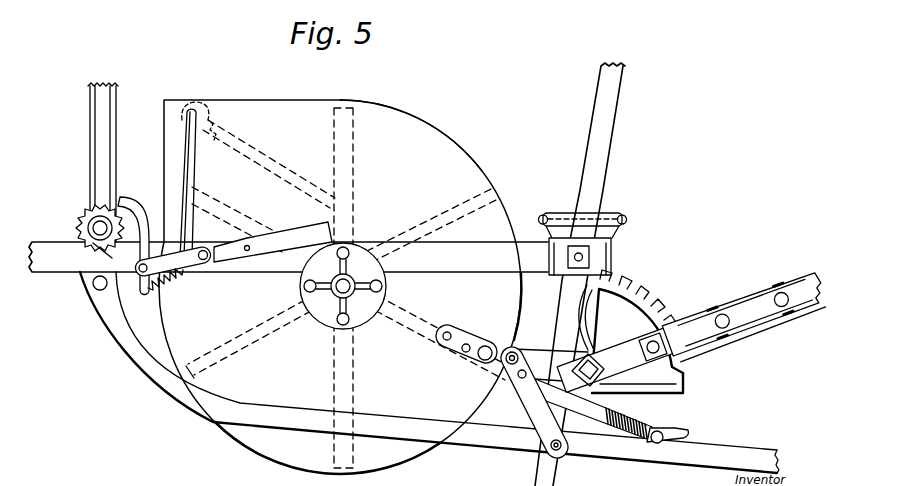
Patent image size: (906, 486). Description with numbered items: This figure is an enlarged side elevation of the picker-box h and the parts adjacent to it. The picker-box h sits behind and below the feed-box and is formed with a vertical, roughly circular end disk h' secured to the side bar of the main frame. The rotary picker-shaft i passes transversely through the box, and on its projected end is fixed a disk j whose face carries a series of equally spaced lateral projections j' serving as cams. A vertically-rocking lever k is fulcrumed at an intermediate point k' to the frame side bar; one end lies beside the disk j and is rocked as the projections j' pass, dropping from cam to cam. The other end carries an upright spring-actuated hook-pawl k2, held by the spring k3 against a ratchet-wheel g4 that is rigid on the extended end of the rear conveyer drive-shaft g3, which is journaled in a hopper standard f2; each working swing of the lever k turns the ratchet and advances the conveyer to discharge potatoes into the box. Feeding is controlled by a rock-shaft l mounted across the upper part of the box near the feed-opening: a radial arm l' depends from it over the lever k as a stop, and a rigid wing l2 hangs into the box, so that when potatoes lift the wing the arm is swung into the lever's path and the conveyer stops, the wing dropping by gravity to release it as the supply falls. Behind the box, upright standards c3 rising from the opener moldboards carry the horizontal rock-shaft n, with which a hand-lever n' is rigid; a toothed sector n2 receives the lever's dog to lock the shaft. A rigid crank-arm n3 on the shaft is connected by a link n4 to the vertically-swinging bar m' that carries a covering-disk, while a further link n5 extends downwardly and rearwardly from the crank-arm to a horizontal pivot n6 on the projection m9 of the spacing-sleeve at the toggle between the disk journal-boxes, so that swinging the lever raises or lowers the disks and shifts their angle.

The hopper standard f2 is at (102, 142).
The rock-shaft l is at (198, 165).
The radial arm l' is at (247, 204).
The wing l2 is at (267, 159).
The hook-pawl k2 is at (145, 203).
The rear drive-shaft g3 is at (98, 228).
The ratchet-wheel g4 is at (93, 243).
The vertically-rocking lever k is at (273, 233).
The fulcrum k' is at (177, 280).
The spring k3 is at (165, 283).
The picker-box end disk h' is at (411, 130).
The picker-box h is at (340, 287).
The upright standard c3 is at (600, 158).
The disk j is at (345, 266).
The picker-shaft i is at (352, 283).
The lateral projection j' is at (322, 338).
The rock-shaft n is at (621, 339).
The hand-lever n' is at (743, 311).
The toothed sector n2 is at (650, 303).
The crank-arm n3 is at (488, 342).
The link n4 is at (532, 399).
The link n5 is at (653, 414).
The horizontal pivot n6 is at (655, 443).
The vertically-swinging bar m' is at (429, 376).
The projection m9 is at (690, 433).